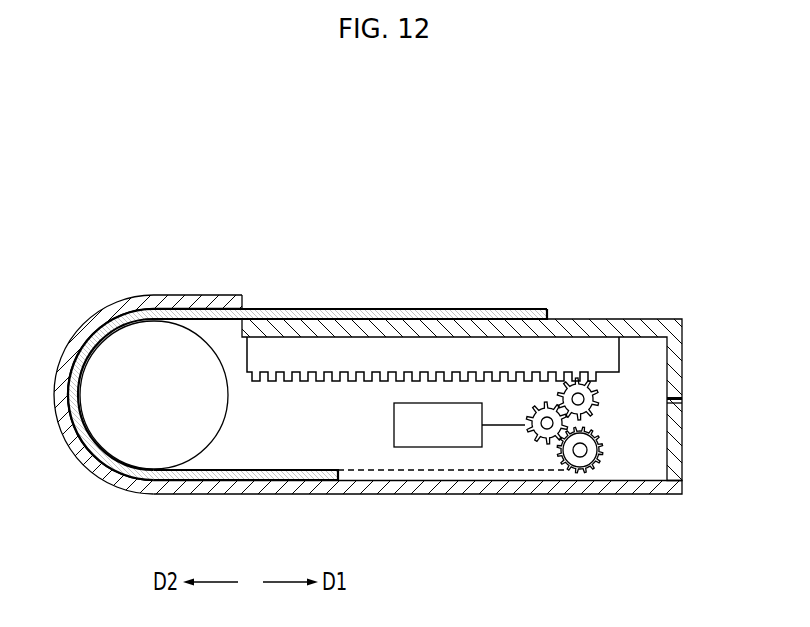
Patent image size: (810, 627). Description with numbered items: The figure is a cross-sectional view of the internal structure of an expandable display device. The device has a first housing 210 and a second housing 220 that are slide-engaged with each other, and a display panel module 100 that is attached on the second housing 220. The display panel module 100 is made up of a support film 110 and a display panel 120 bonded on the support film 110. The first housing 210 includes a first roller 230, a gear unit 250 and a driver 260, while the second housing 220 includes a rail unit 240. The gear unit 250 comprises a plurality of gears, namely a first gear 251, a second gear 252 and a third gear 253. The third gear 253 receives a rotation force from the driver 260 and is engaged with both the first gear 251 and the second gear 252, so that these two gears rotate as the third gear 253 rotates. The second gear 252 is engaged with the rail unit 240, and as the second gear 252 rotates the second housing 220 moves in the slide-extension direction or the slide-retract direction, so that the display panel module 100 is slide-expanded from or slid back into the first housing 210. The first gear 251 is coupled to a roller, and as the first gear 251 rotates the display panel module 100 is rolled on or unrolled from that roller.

The display panel module 100 is at (434, 300).
The support film 110 is at (497, 480).
The display panel 120 is at (292, 480).
The first housing 210 is at (182, 295).
The second housing 220 is at (631, 319).
The first roller 230 is at (145, 452).
The rail unit 240 is at (613, 355).
The gear unit 250 is at (655, 425).
The first gear 251 is at (600, 448).
The second gear 252 is at (598, 396).
The third gear 253 is at (565, 420).
The driver 260 is at (433, 447).